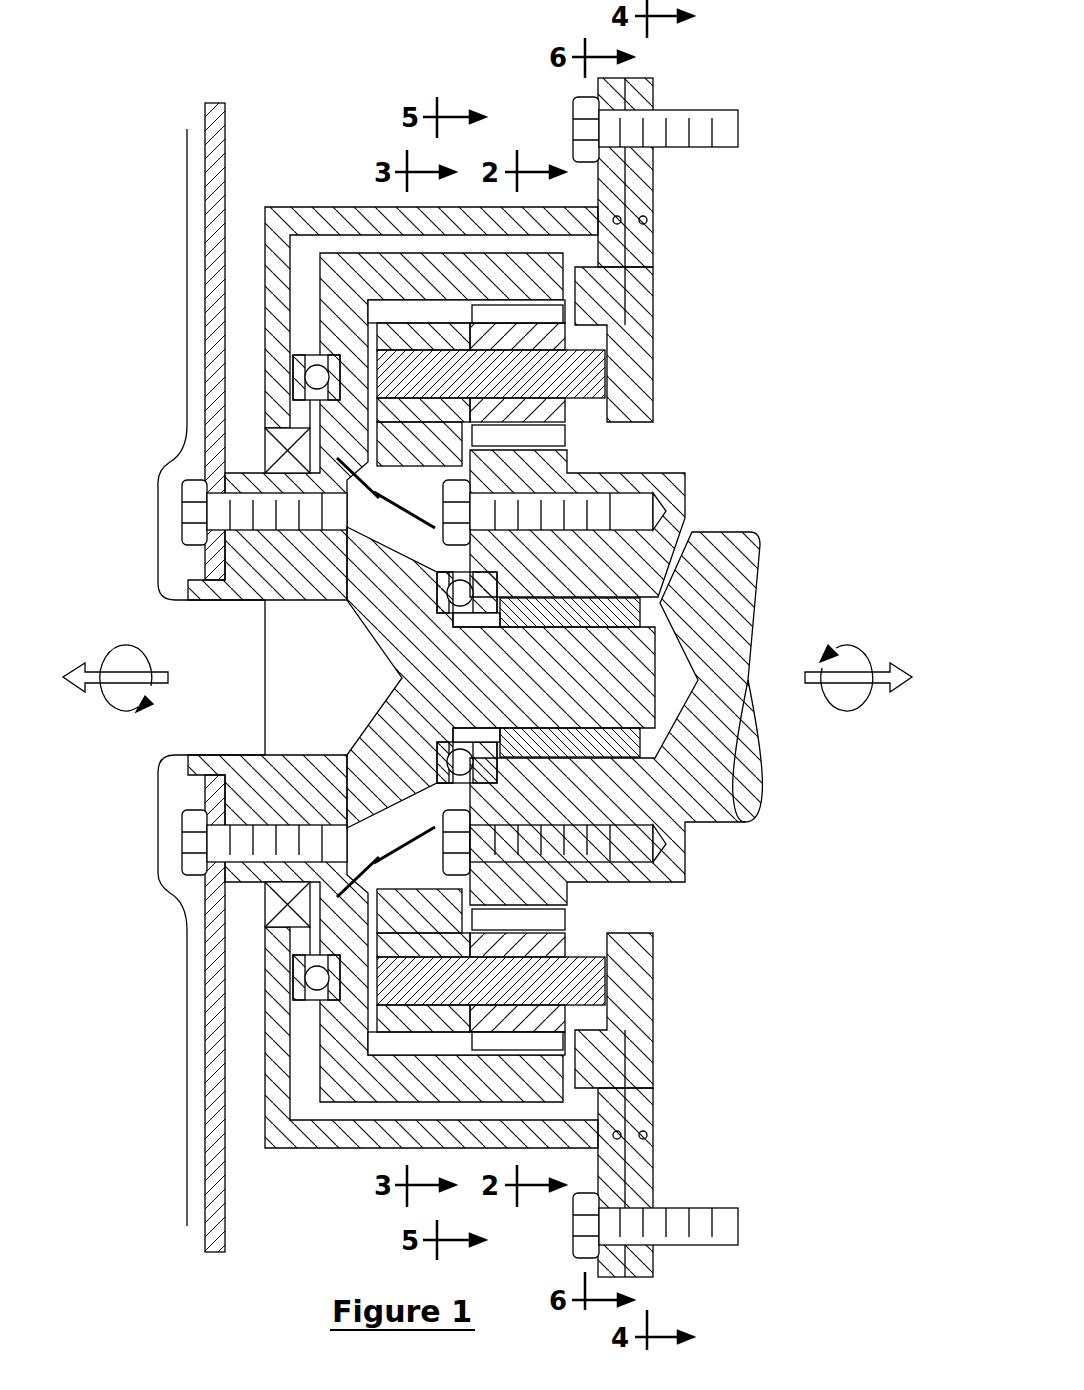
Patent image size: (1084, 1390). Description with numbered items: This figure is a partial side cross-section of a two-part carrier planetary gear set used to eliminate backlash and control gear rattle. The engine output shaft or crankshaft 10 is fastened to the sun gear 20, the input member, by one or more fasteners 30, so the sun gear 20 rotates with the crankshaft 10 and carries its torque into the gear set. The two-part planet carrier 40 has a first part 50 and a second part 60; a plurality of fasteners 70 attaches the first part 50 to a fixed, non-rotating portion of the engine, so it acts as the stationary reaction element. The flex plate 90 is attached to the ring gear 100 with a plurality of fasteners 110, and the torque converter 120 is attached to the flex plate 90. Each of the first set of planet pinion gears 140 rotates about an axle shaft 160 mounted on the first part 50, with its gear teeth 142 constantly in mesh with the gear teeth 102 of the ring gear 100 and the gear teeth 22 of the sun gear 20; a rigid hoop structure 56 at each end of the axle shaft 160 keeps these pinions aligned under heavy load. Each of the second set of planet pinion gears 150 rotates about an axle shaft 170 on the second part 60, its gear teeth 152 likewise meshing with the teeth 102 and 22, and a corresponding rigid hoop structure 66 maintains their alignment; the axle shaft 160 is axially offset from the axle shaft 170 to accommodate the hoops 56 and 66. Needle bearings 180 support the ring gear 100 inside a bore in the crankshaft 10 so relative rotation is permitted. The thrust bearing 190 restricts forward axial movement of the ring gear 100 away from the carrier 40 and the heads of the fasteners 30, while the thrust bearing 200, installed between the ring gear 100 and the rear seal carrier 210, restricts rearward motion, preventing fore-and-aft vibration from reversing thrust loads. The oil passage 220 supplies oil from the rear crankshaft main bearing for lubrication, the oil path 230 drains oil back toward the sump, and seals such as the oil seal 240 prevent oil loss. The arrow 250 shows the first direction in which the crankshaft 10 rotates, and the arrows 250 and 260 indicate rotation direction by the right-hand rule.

The crankshaft 10 is at (732, 570).
The sun gear 20 is at (540, 462).
The gear teeth 22 is at (570, 435).
The fasteners 30 is at (480, 512).
The two-part planet carrier 40 is at (672, 362).
The first part of planet carrier 50 is at (662, 266).
The rigid hoop structure 56 is at (393, 340).
The second part of planet carrier 60 is at (662, 415).
The rigid hoop structure 66 is at (397, 443).
The fasteners 70 is at (695, 1208).
The flex plate 90 is at (228, 130).
The ring gear 100 is at (537, 267).
The gear teeth 102 is at (382, 312).
The fasteners 110 is at (215, 512).
The torque converter 120 is at (186, 200).
The first set of planet pinion gears 140 is at (557, 338).
The gear teeth 142 is at (520, 317).
The second set of planet pinion gears 150 is at (530, 1017).
The gear teeth 152 is at (545, 915).
The axle shaft 160 is at (570, 380).
The axle shaft 170 is at (570, 972).
The needle bearings 180 is at (640, 797).
The thrust bearing 190 is at (445, 762).
The thrust bearing 200 is at (330, 975).
The rear seal carrier 210 is at (316, 207).
The oil passage 220 is at (680, 535).
The oil path 230 is at (635, 1105).
The oil seal 240 is at (273, 450).
The arrow 250 is at (878, 668).
The arrow 260 is at (118, 668).